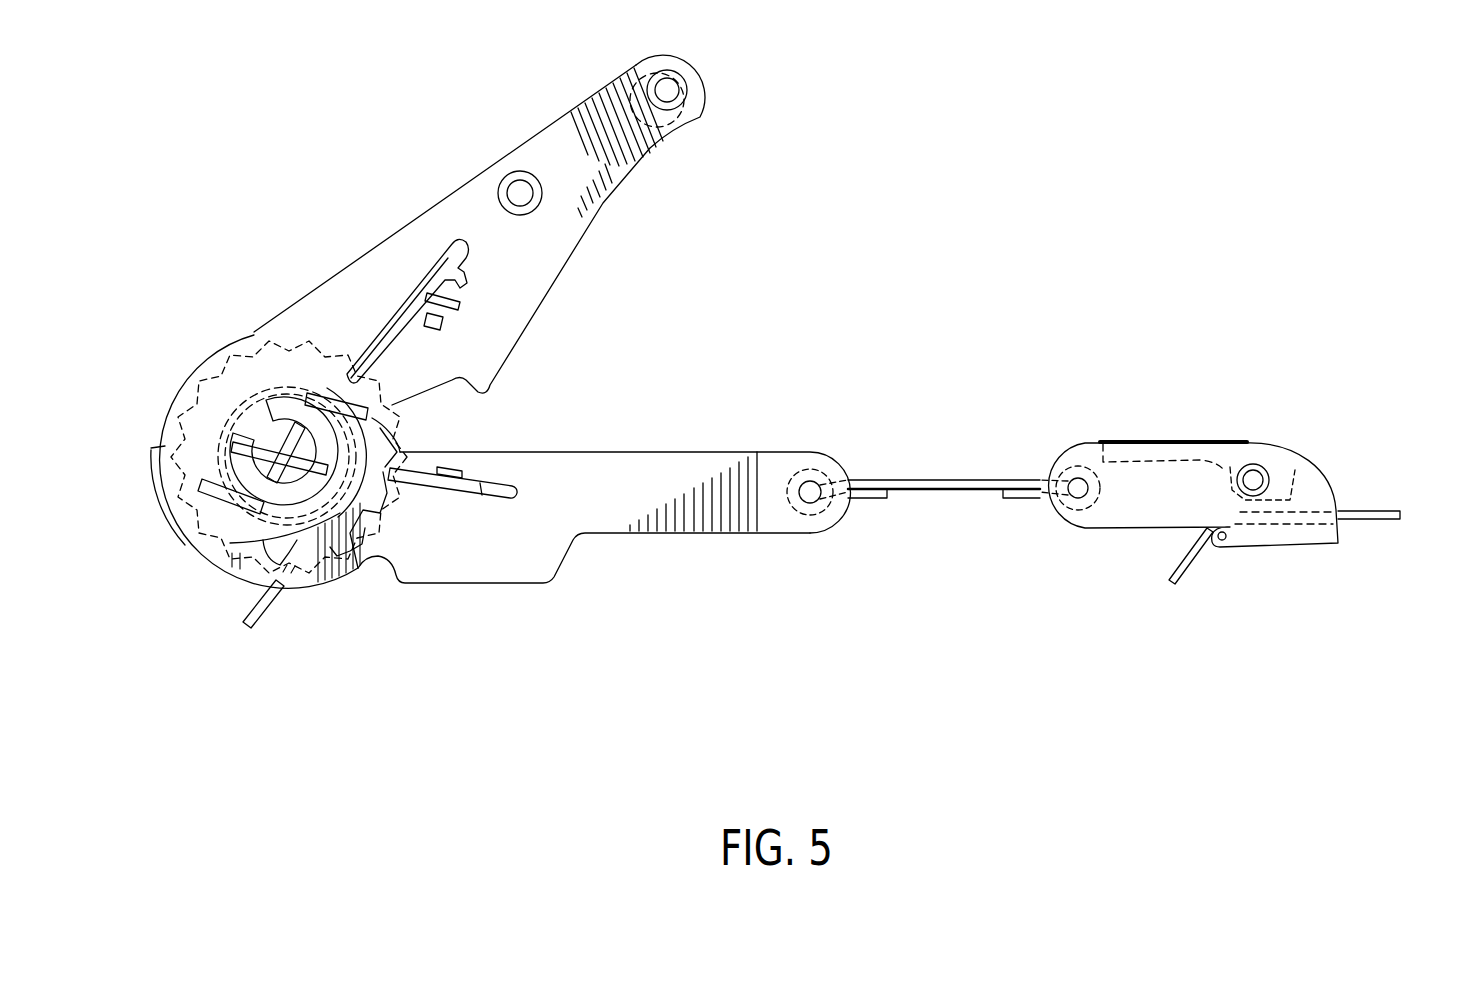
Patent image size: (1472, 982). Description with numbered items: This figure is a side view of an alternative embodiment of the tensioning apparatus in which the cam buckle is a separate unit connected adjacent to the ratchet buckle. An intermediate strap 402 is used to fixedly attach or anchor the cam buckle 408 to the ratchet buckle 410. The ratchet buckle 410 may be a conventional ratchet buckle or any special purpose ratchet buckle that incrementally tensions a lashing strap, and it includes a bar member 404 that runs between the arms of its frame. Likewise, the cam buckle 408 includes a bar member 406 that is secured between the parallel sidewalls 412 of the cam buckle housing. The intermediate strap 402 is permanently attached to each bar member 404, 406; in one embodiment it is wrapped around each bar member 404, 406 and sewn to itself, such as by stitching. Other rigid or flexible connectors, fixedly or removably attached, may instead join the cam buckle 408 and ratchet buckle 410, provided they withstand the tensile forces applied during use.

The intermediate strap 402 is at (947, 480).
The bar member 404 is at (808, 502).
The bar member 406 is at (1080, 497).
The cam buckle 408 is at (1217, 407).
The ratchet buckle 410 is at (693, 256).
The parallel sidewalls 412 is at (1320, 490).